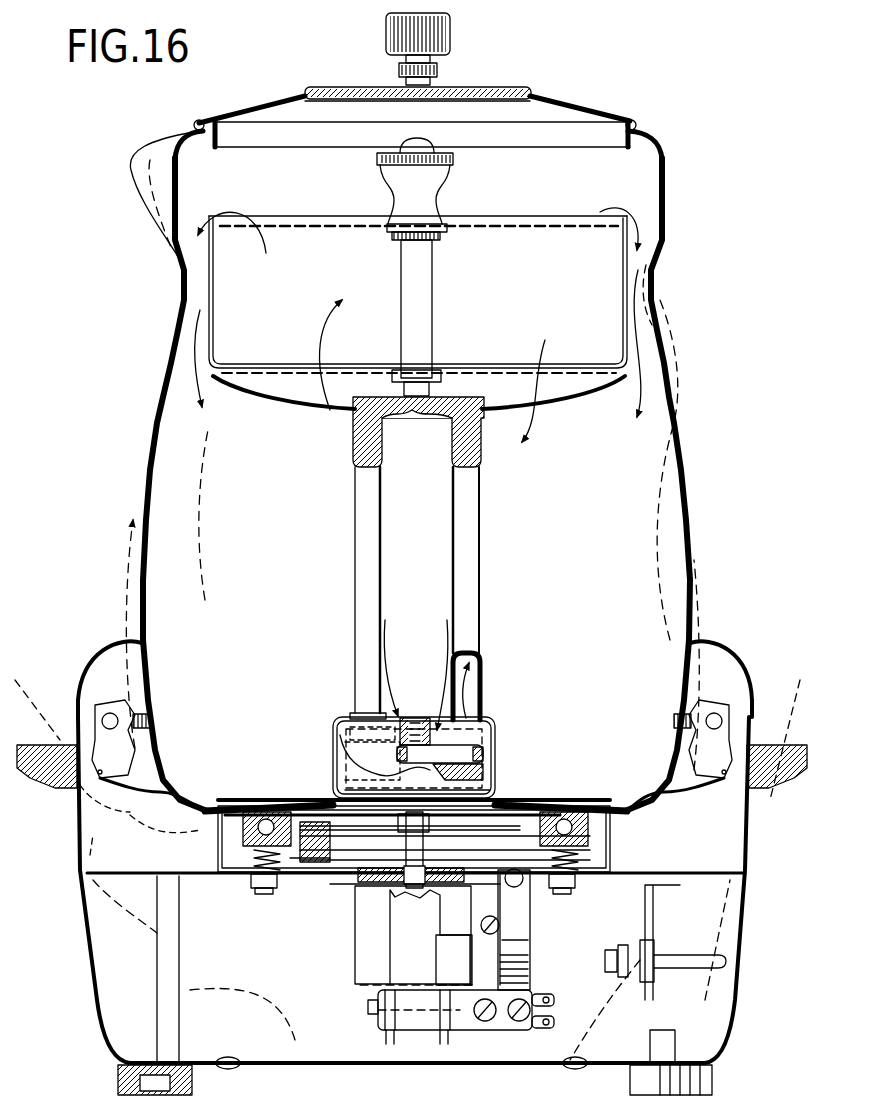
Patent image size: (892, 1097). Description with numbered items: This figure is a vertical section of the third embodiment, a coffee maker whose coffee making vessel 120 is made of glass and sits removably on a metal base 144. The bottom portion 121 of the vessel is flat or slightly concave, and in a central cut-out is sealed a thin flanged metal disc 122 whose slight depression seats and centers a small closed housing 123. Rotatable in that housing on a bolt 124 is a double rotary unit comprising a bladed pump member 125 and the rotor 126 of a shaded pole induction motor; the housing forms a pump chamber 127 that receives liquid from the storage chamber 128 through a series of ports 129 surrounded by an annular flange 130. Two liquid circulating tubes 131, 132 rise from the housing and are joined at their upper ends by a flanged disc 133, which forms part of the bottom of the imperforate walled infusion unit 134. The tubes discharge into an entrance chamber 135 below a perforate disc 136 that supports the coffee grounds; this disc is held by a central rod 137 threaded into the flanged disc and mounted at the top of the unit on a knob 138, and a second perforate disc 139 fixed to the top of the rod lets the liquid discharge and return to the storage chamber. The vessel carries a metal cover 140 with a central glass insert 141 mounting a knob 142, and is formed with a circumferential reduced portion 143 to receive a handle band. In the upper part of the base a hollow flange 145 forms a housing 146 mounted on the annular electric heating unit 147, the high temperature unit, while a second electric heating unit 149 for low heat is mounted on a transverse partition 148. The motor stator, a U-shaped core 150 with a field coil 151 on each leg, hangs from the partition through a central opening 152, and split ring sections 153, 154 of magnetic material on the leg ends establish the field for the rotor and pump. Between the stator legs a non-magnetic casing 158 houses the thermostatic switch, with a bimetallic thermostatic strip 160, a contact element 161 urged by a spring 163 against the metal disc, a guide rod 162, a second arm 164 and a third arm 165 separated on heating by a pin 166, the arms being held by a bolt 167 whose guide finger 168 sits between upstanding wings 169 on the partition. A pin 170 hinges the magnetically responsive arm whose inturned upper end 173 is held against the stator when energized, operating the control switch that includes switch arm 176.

The coffee making vessel 120 is at (147, 464).
The bottom portion 121 is at (520, 818).
The flanged metal disc 122 is at (332, 798).
The closed housing 123 is at (493, 728).
The bolt 124 is at (412, 718).
The bladed pump member 125 is at (470, 753).
The rotor 126 is at (486, 770).
The pump chamber 127 is at (487, 730).
The storage chamber 128 is at (150, 614).
The ports 129 is at (470, 658).
The annular flange 130 is at (484, 672).
The liquid circulating tube 131 is at (358, 556).
The liquid circulating tube 132 is at (462, 564).
The flanged disc 133 is at (392, 412).
The infusion unit 134 is at (626, 306).
The entrance chamber 135 is at (565, 405).
The perforate disc 136 is at (505, 374).
The central rod 137 is at (420, 330).
The knob 138 is at (424, 210).
The second perforate disc 139 is at (496, 226).
The metal cover 140 is at (552, 104).
The glass insert 141 is at (462, 87).
The knob 142 is at (452, 29).
The circumferential reduced portion 143 is at (666, 266).
The base 144 is at (86, 915).
The hollow flange 145 is at (715, 660).
The housing 146 is at (726, 695).
The annular electric heating unit 147 is at (712, 704).
The transverse partition 148 is at (148, 876).
The second electric heating unit 149 is at (262, 812).
The U-shaped core 150 is at (356, 882).
The field coil 151 is at (362, 938).
The central opening 152 is at (320, 862).
The ring section 153 is at (348, 742).
The ring section 154 is at (494, 790).
The non-magnetic casing 158 is at (522, 888).
The bimetallic thermostatic strip 160 is at (520, 812).
The contact element 161 is at (352, 725).
The guide rod 162 is at (426, 870).
The spring 163 is at (386, 880).
The second arm 164 is at (500, 926).
The third arm 165 is at (530, 950).
The pin 166 is at (518, 828).
The bolt 167 is at (310, 858).
The guide finger 168 is at (252, 876).
The upstanding wings 169 is at (264, 888).
The pin 170 is at (368, 1009).
The inturned upper end 173 is at (400, 940).
The switch arm 176 is at (530, 980).